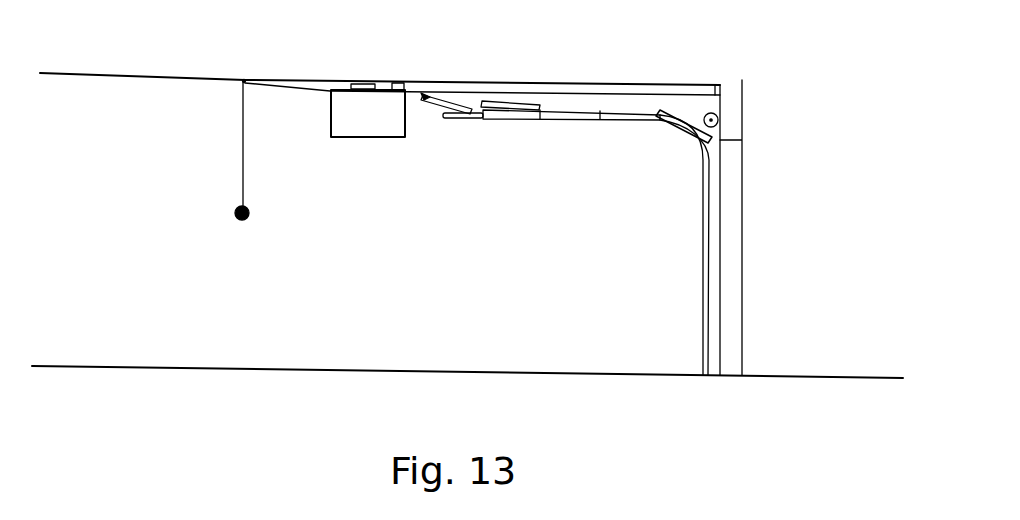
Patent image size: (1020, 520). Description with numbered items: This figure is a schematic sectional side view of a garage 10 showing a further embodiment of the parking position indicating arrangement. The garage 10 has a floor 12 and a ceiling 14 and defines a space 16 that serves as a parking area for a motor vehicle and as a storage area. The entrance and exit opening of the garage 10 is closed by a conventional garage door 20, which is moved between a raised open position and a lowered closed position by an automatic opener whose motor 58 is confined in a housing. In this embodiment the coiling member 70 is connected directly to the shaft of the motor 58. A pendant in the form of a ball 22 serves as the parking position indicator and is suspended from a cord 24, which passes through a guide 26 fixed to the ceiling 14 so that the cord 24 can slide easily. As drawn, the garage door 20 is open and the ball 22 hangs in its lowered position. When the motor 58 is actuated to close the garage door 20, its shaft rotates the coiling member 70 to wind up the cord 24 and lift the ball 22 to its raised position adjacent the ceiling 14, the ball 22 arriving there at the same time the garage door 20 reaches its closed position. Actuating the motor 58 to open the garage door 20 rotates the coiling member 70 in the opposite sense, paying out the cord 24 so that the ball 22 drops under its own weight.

The garage 10 is at (792, 68).
The floor 12 is at (80, 366).
The ceiling 14 is at (102, 77).
The space 16 is at (480, 278).
The garage door 20 is at (572, 117).
The ball 22 is at (249, 215).
The cord 24 is at (244, 160).
The guide 26 is at (244, 82).
The motor 58 is at (375, 138).
The coiling member 70 is at (367, 80).